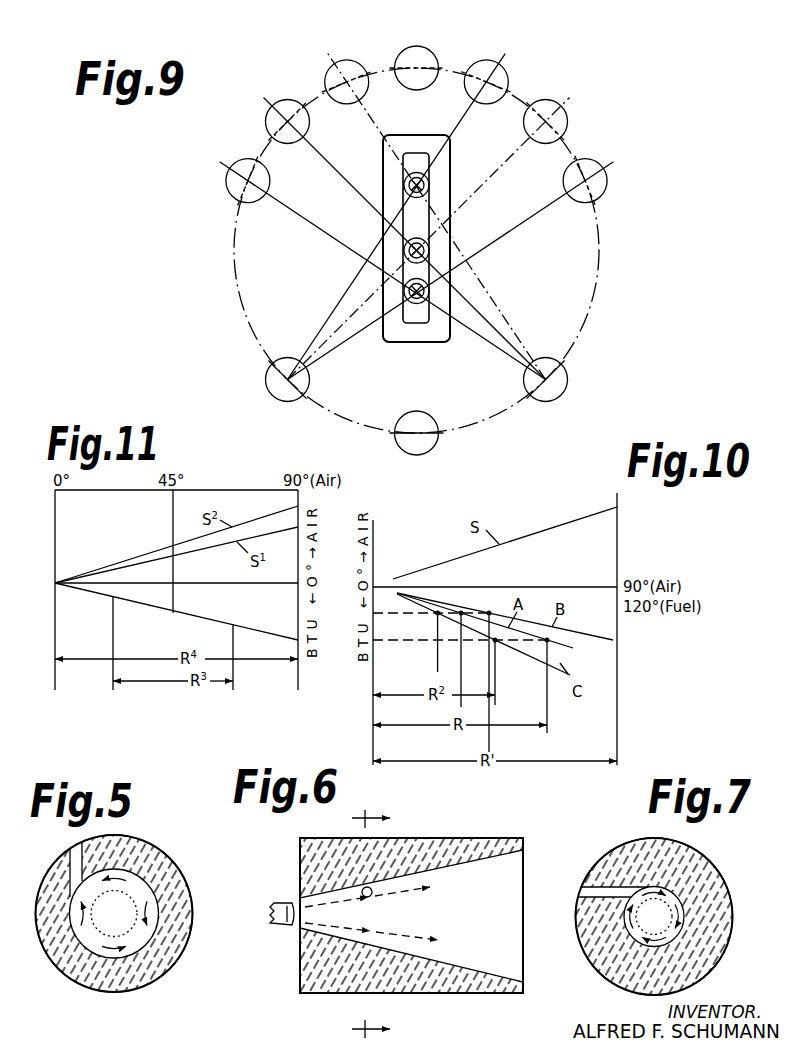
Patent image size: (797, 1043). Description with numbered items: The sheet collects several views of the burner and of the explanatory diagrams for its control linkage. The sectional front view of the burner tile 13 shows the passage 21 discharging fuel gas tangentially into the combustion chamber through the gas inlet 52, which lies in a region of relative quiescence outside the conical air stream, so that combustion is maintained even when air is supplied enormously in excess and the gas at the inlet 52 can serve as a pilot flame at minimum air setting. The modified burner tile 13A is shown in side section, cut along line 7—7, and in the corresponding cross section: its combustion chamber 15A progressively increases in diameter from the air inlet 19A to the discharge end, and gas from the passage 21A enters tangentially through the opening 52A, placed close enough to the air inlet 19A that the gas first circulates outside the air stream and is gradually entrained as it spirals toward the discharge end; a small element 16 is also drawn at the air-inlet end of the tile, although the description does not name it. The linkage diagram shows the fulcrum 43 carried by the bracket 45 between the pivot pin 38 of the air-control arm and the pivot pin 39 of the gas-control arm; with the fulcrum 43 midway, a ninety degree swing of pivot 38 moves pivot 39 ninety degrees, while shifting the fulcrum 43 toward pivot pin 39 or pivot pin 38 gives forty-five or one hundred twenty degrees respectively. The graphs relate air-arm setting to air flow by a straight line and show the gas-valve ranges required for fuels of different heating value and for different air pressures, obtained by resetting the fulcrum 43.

In FIG. 9, the pivot pin 39 is at (427, 112).
In FIG. 9, the pivot pin 38 is at (413, 414).
In FIG. 9, the fulcrum 43 is at (429, 178).
In FIG. 9, the bracket 45 is at (388, 180).
In FIG. 5, the burner tile 13 is at (167, 880).
In FIG. 5, the passage 21 is at (81, 858).
In FIG. 5, the gas inlet 52 is at (80, 885).
In FIG. 6, the burner tile 13A is at (453, 850).
In FIG. 7, the burner tile 13A is at (727, 888).
In FIG. 6, the combustion chamber 15A is at (507, 960).
In FIG. 7, the combustion chamber 15A is at (680, 925).
In FIG. 6, the air inlet 19A is at (300, 925).
In FIG. 6, the opening 52A is at (372, 896).
In FIG. 7, the opening 52A is at (633, 896).
In FIG. 6, the nozzle 16 is at (283, 898).
In FIG. 7, the passage 21A is at (597, 892).
In FIG. 6, the section line 7 is at (364, 924).